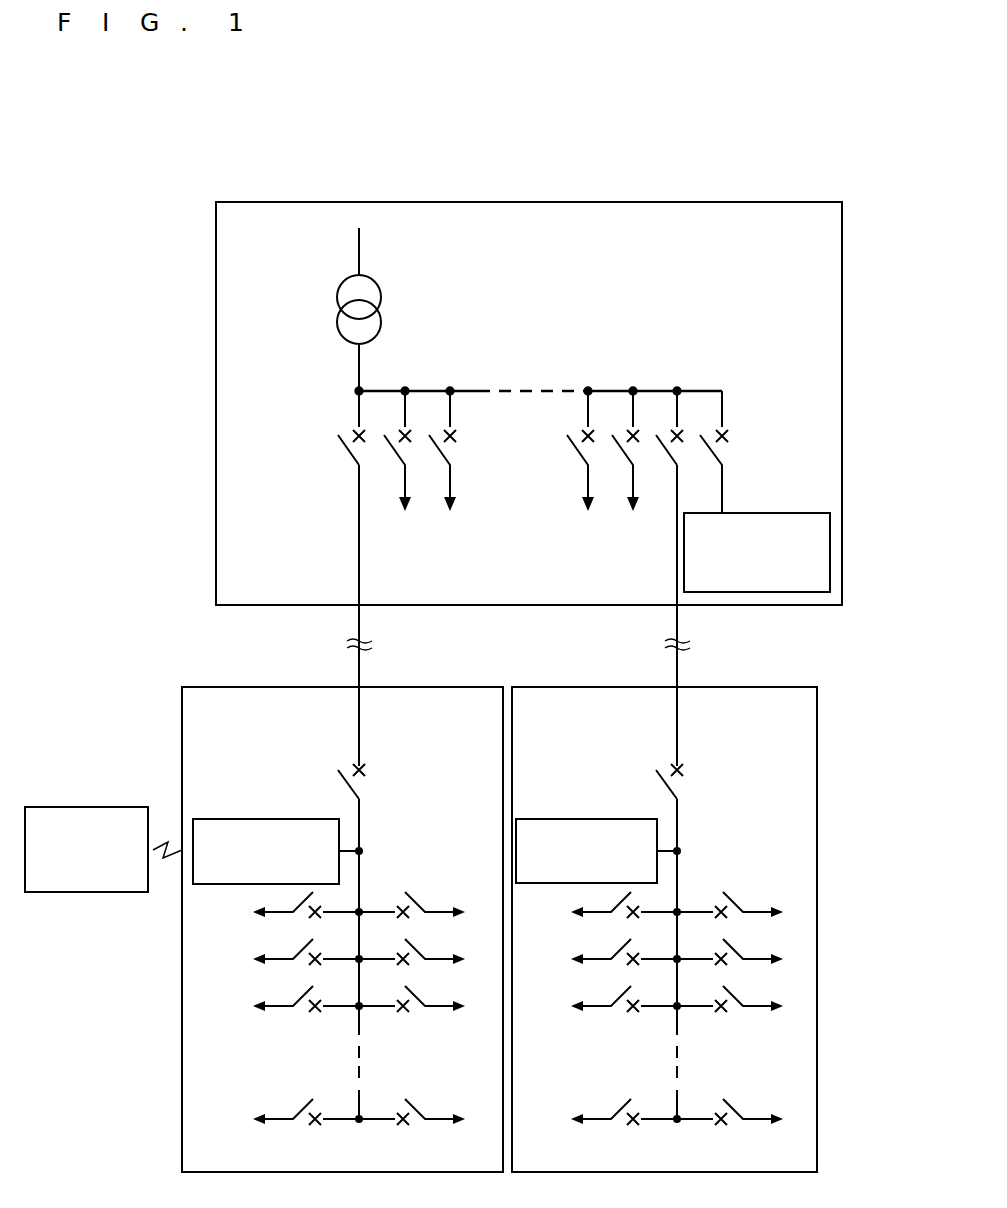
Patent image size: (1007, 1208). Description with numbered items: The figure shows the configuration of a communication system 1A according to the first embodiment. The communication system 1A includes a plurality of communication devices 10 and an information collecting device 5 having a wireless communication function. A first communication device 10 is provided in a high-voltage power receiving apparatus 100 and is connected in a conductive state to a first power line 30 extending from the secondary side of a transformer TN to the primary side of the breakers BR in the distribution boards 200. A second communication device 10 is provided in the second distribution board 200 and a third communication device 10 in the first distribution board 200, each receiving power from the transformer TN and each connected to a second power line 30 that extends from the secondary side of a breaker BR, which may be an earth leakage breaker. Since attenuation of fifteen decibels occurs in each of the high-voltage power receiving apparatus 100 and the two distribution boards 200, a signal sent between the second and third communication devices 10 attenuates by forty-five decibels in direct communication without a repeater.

The communication system 1A is at (706, 160).
The high-voltage power receiving apparatus 100 is at (523, 202).
The transformer TN is at (383, 322).
The power line 30 is at (722, 490).
The communication device 10 is at (745, 593).
The distribution board 200 is at (383, 687).
The breaker BR is at (366, 786).
The information collecting device 5 is at (96, 807).